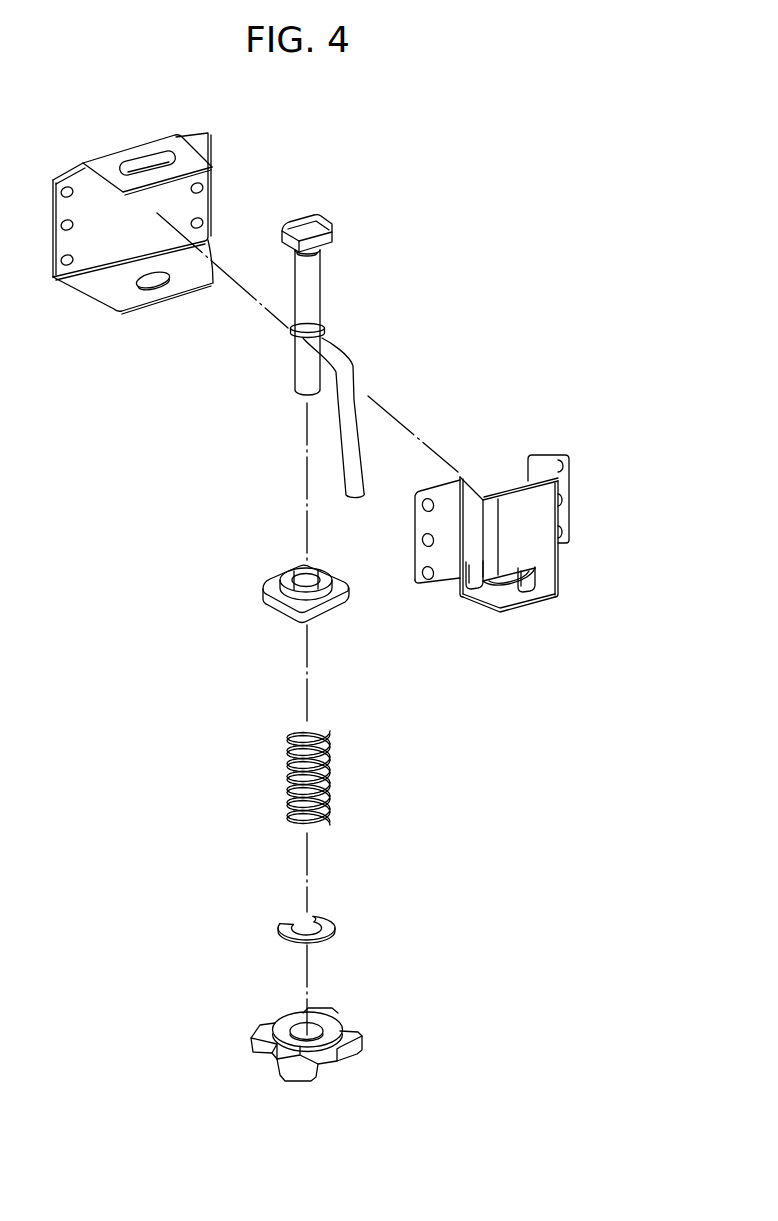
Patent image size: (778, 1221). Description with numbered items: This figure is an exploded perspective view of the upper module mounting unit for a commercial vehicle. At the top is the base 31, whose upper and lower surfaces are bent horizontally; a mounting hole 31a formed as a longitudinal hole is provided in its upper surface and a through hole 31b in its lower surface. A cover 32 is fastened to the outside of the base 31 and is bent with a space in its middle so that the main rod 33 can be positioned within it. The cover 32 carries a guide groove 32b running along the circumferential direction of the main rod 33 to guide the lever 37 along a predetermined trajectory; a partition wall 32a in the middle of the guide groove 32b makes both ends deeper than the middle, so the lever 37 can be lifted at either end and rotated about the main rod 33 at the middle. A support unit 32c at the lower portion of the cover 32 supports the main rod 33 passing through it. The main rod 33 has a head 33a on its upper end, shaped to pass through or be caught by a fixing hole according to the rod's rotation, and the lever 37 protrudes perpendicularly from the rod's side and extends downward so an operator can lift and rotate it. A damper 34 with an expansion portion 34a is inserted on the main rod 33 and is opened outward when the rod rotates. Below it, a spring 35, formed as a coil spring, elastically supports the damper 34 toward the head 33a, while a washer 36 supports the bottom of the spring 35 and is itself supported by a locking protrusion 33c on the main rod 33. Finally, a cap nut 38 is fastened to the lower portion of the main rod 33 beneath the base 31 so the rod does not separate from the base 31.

The base 31 is at (108, 246).
The mounting hole 31a is at (147, 165).
The through hole 31b is at (155, 282).
The cover 32 is at (533, 553).
The partition wall 32a is at (490, 593).
The guide groove 32b is at (525, 593).
The support unit 32c is at (458, 578).
The main rod 33 is at (329, 334).
The head 33a is at (318, 216).
The locking protrusion 33c is at (323, 326).
The damper 34 is at (254, 602).
The expansion portion 34a is at (290, 573).
The spring 35 is at (325, 772).
The washer 36 is at (330, 920).
The lever 37 is at (350, 427).
The cap nut 38 is at (258, 1022).